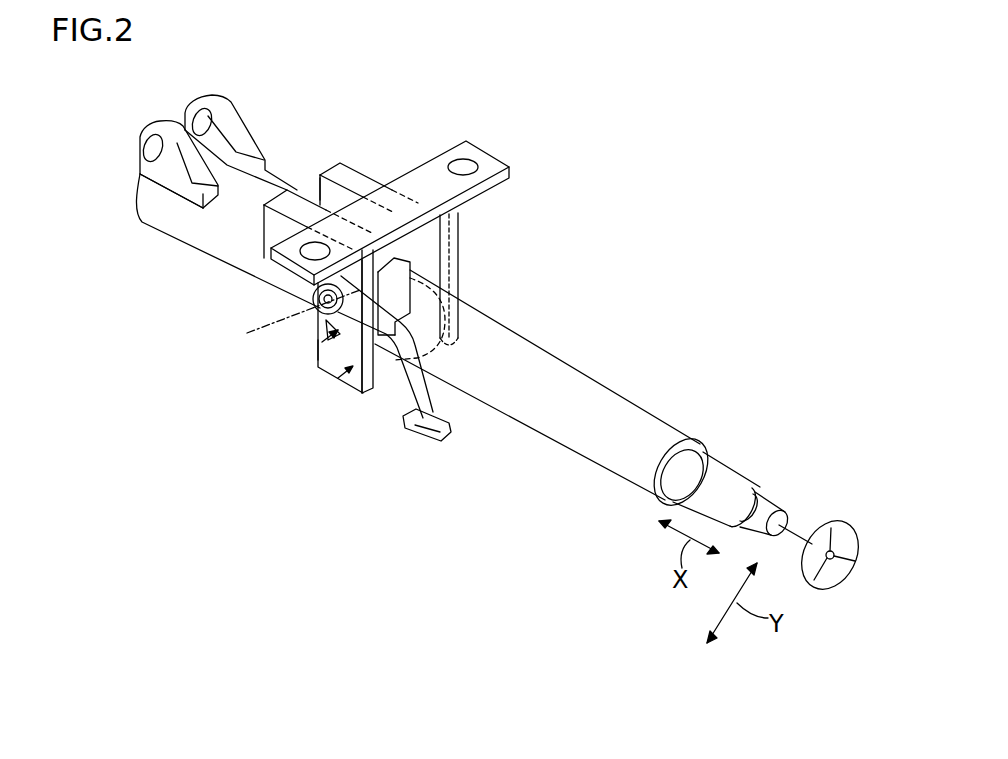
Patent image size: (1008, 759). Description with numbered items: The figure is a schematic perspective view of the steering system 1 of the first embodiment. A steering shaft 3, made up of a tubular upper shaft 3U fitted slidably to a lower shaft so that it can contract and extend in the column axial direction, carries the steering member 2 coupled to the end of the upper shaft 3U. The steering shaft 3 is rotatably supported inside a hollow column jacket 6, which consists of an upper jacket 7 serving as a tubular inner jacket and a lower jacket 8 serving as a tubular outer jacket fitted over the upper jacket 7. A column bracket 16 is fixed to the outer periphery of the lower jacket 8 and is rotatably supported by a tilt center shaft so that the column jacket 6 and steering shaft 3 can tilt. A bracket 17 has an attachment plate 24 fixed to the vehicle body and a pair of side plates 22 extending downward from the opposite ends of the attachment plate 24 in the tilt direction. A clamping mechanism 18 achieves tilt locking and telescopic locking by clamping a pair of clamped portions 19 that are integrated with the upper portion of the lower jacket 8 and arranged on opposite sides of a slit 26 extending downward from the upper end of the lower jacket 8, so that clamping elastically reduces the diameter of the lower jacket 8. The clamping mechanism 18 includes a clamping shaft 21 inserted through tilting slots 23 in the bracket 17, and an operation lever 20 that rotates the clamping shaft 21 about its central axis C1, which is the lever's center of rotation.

The steering system 1 is at (777, 397).
The steering member 2 is at (839, 522).
The steering shaft 3 is at (714, 458).
The upper shaft 3U is at (735, 480).
The column jacket 6 is at (640, 392).
The upper jacket 7 is at (583, 390).
The lower jacket 8 is at (183, 230).
The column bracket 16 is at (213, 95).
The bracket 17 is at (342, 392).
The clamping mechanism 18 is at (314, 297).
The clamped portions 19 is at (268, 226).
The operation lever 20 is at (407, 383).
The clamping shaft 21 is at (317, 320).
The side plates 22 is at (330, 363).
The tilting slots 23 is at (320, 350).
The attachment plate 24 is at (428, 168).
The slit 26 is at (332, 193).
The central axis C1 is at (283, 319).